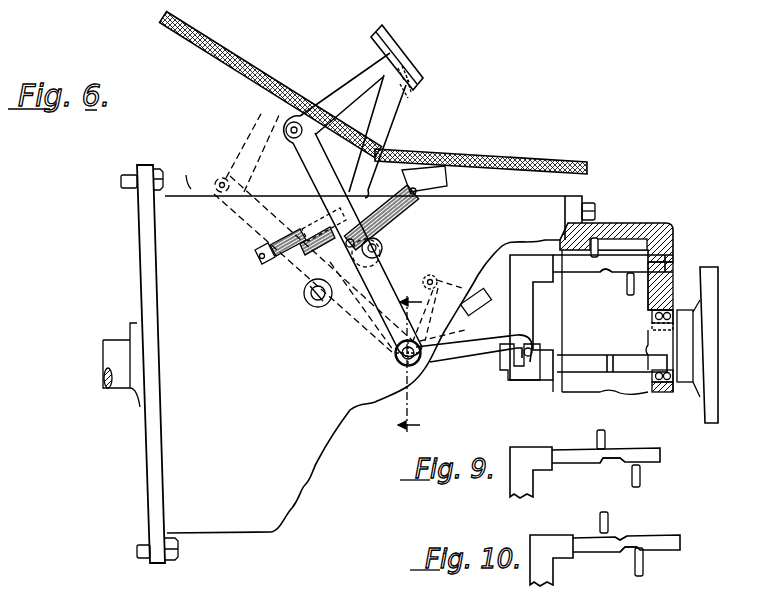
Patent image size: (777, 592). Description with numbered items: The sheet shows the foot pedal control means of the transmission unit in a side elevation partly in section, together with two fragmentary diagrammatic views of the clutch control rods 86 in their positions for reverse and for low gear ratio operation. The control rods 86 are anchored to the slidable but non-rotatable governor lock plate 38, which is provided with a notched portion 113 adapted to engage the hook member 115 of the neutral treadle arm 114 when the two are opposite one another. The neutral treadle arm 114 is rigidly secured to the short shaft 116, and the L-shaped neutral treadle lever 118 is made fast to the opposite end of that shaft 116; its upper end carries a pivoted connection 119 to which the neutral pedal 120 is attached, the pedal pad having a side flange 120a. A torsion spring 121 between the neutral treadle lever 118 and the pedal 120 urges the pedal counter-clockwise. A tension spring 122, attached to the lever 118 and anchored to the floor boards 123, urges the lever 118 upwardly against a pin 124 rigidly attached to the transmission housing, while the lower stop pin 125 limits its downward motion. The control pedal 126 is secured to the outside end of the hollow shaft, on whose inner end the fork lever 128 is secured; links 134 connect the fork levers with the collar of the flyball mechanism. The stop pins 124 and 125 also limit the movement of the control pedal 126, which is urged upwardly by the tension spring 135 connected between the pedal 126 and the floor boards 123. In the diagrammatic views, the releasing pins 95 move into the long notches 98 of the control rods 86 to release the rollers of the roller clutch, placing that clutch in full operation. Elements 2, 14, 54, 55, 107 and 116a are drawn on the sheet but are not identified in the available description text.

In FIG. 6, the frame bracket 2 is at (110, 340).
In FIG. 6, the section line 14 is at (413, 363).
In FIG. 6, the governor lock plate 38 is at (540, 322).
In FIG. 9, the governor lock plate 38 is at (536, 490).
In FIG. 10, the governor lock plate 38 is at (556, 578).
In FIG. 6, the bearing block 54 is at (648, 225).
In FIG. 6, the wheel plate 55 is at (705, 298).
In FIG. 6, the control rods 86 is at (672, 266).
In FIG. 9, the control rods 86 is at (662, 452).
In FIG. 10, the control rods 86 is at (682, 542).
In FIG. 6, the releasing pins 95 is at (626, 287).
In FIG. 9, the releasing pins 95 is at (641, 477).
In FIG. 10, the releasing pins 95 is at (644, 563).
In FIG. 6, the long notches 98 is at (608, 272).
In FIG. 9, the long notches 98 is at (615, 463).
In FIG. 10, the long notches 98 is at (626, 550).
In FIG. 6, the pin 107 is at (593, 259).
In FIG. 9, the pin 107 is at (606, 438).
In FIG. 10, the pin 107 is at (609, 522).
In FIG. 6, the notched portion 113 is at (534, 348).
In FIG. 6, the neutral treadle arm 114 is at (465, 350).
In FIG. 6, the hook member 115 is at (520, 362).
In FIG. 6, the short shaft 116 is at (400, 366).
In FIG. 6, the pivot boss 116a is at (396, 357).
In FIG. 6, the neutral treadle lever 118 is at (384, 288).
In FIG. 6, the pivoted connection 119 is at (393, 132).
In FIG. 6, the neutral pedal 120 is at (376, 30).
In FIG. 6, the side flange 120a is at (419, 64).
In FIG. 6, the torsion spring 121 is at (268, 265).
In FIG. 6, the tension spring 122 is at (404, 210).
In FIG. 6, the floor boards 123 is at (216, 46).
In FIG. 6, the pin 124 is at (386, 247).
In FIG. 6, the lower stop pin 125 is at (308, 302).
In FIG. 6, the control pedal 126 is at (293, 158).
In FIG. 6, the fork lever 128 is at (439, 308).
In FIG. 6, the links 134 is at (476, 294).
In FIG. 6, the tension spring 135 is at (398, 192).